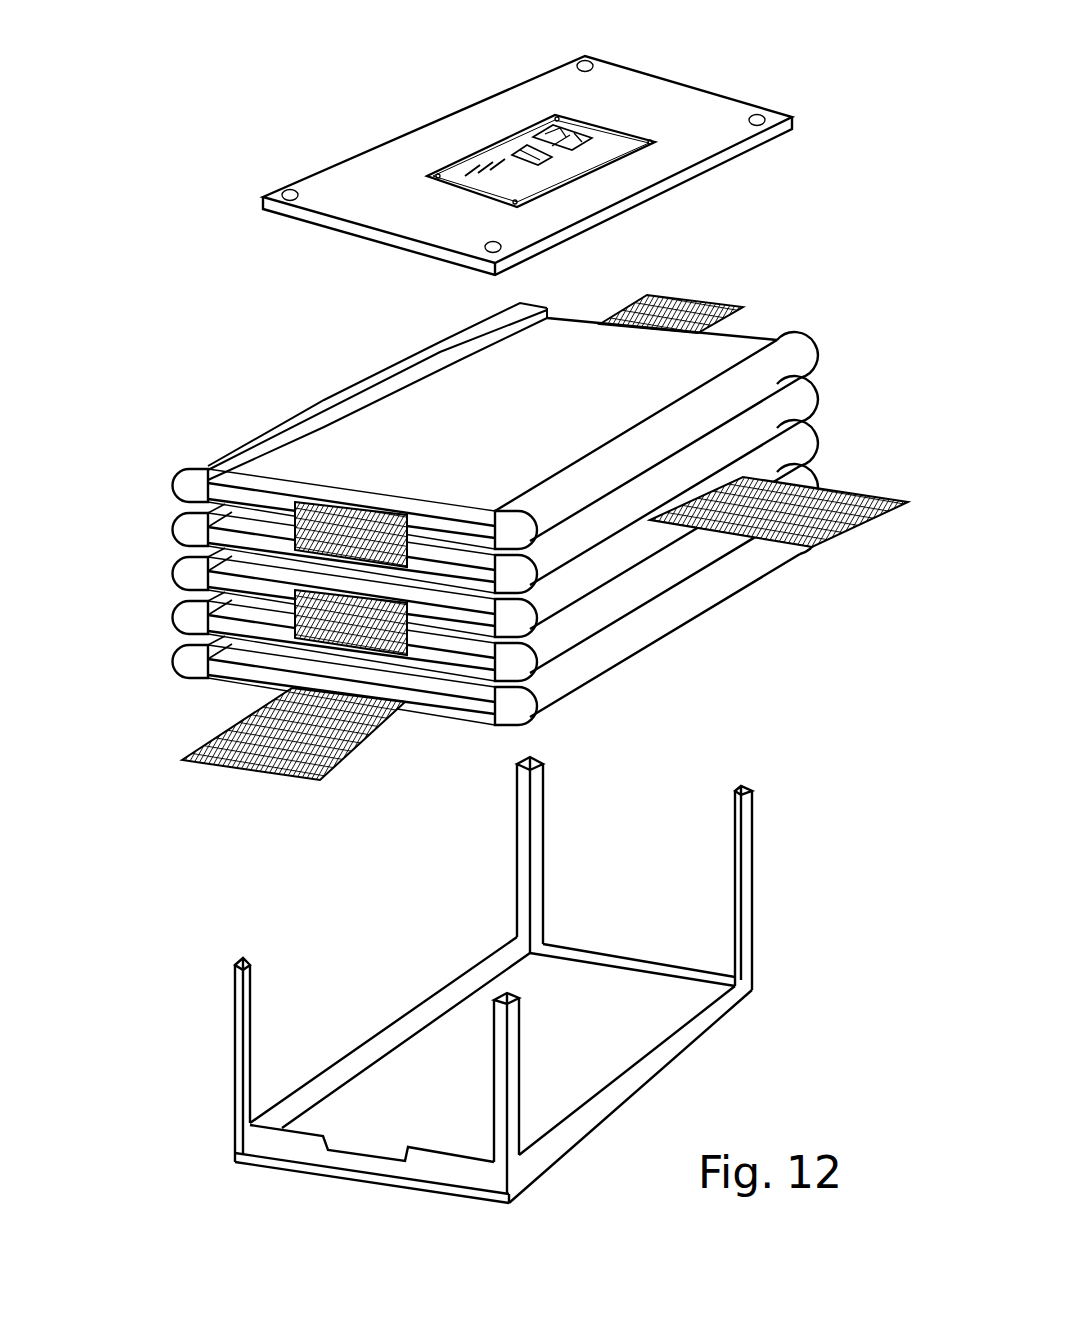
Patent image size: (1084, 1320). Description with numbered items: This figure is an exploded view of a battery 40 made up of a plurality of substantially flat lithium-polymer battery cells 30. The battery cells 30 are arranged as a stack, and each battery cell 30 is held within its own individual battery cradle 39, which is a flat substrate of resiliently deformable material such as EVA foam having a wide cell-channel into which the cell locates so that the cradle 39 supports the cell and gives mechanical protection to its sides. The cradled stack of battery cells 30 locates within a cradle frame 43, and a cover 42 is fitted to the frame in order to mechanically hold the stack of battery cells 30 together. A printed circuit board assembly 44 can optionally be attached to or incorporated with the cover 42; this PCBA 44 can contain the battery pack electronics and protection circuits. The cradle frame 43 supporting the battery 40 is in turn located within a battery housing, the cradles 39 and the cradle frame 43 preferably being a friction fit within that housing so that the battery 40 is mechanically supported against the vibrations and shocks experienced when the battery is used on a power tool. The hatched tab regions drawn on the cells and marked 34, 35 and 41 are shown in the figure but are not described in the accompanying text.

The lithium-polymer battery cell 30 is at (396, 432).
The first electrode tab 34 is at (356, 512).
The second electrode tab 35 is at (680, 291).
The battery cradle 39 is at (185, 535).
The battery 40 is at (477, 480).
The tab 41 is at (820, 487).
The cover 42 is at (658, 113).
The cradle frame 43 is at (745, 912).
The printed circuit board assembly (PCBA) 44 is at (508, 162).